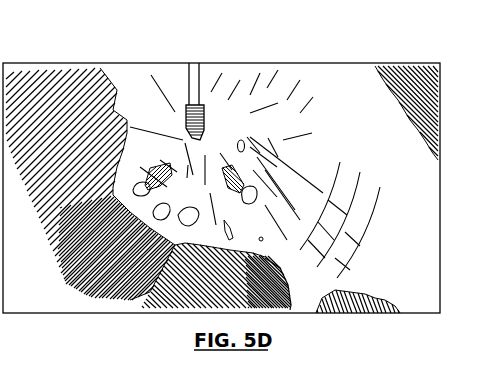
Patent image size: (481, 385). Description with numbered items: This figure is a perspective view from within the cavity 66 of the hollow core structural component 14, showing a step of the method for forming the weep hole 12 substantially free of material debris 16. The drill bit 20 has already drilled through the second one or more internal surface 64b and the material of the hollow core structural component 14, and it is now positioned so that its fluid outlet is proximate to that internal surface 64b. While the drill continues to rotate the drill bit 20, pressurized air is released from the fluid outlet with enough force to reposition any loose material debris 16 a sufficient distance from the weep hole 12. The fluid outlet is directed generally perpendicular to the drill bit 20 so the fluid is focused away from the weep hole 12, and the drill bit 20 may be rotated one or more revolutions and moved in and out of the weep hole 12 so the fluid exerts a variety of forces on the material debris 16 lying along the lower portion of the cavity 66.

The weep hole 12 is at (207, 137).
The hollow core structural component 14 is at (66, 298).
The material debris 16 is at (184, 228).
The drill bit 20 is at (192, 63).
The second one or more internal surface 64b is at (265, 260).
The cavity 66 is at (147, 88).